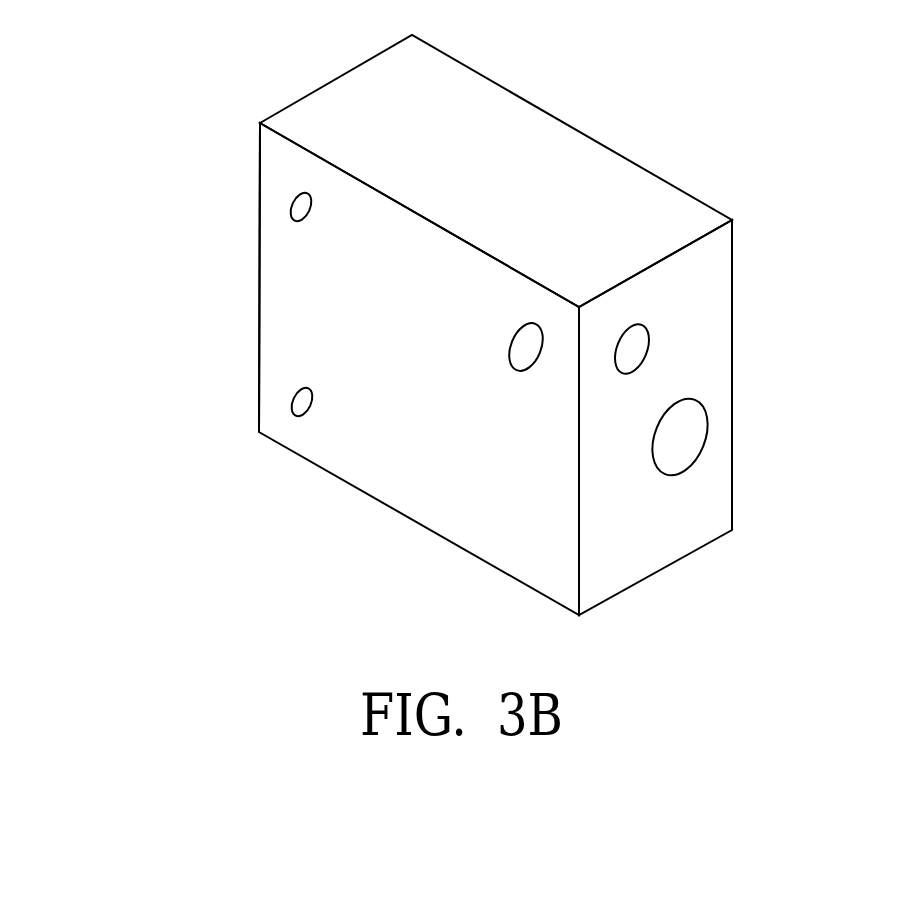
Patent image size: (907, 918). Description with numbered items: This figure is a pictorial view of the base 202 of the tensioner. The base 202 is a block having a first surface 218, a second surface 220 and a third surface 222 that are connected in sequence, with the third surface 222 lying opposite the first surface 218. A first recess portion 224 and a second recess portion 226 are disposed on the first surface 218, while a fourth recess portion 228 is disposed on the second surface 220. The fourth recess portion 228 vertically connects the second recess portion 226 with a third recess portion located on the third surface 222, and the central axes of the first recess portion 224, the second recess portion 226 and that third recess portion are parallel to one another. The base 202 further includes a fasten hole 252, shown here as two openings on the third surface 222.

The base 202 is at (507, 88).
The first surface 218 is at (645, 540).
The second surface 220 is at (540, 513).
The third surface 222 is at (258, 287).
The first recess portion 224 is at (687, 428).
The second recess portion 226 is at (630, 347).
The fourth recess portion 228 is at (525, 348).
The fasten hole 252 is at (297, 200).